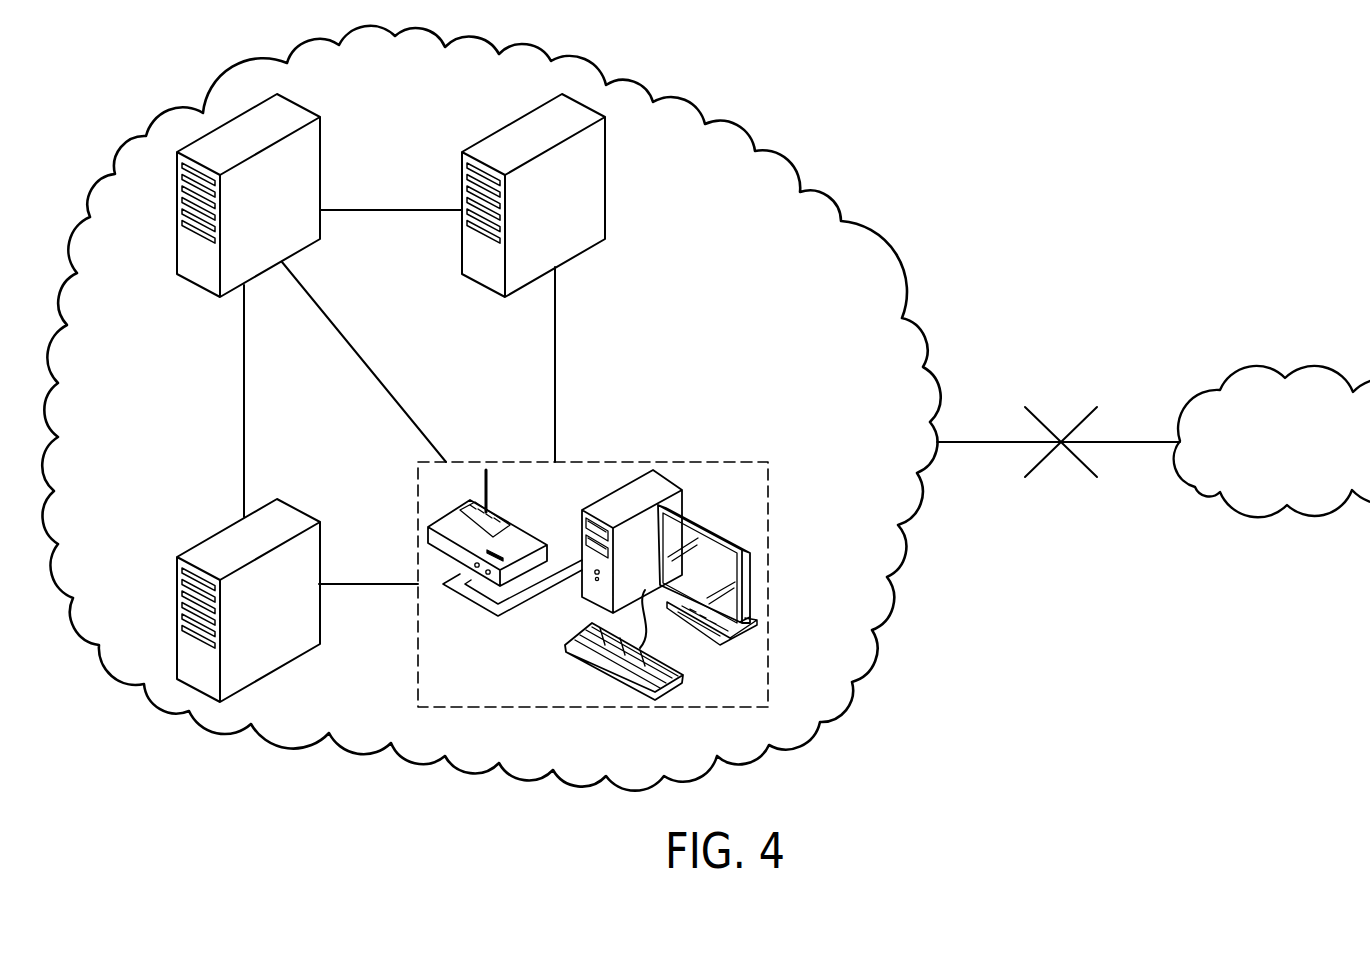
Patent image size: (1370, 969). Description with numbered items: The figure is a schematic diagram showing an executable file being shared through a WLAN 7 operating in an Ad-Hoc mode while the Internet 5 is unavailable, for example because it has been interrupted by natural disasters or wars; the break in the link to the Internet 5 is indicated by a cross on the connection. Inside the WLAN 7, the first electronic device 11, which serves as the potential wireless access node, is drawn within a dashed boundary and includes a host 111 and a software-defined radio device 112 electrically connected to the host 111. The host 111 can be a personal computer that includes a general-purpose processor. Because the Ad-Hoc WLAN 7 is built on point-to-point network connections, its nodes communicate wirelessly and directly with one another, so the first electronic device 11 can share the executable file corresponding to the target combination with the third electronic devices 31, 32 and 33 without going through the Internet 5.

The Internet 5 is at (1250, 372).
The WLAN 7 is at (903, 286).
The first electronic device 11 is at (768, 579).
The host 111 is at (621, 500).
The software-defined radio device 112 is at (520, 535).
The third electronic device 31 is at (302, 172).
The third electronic device 32 is at (288, 519).
The third electronic device 33 is at (588, 195).